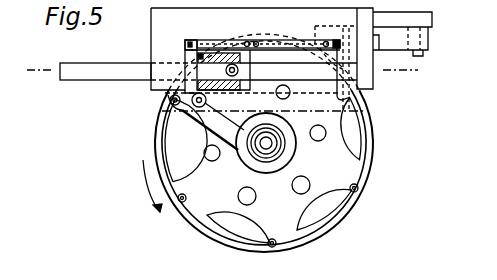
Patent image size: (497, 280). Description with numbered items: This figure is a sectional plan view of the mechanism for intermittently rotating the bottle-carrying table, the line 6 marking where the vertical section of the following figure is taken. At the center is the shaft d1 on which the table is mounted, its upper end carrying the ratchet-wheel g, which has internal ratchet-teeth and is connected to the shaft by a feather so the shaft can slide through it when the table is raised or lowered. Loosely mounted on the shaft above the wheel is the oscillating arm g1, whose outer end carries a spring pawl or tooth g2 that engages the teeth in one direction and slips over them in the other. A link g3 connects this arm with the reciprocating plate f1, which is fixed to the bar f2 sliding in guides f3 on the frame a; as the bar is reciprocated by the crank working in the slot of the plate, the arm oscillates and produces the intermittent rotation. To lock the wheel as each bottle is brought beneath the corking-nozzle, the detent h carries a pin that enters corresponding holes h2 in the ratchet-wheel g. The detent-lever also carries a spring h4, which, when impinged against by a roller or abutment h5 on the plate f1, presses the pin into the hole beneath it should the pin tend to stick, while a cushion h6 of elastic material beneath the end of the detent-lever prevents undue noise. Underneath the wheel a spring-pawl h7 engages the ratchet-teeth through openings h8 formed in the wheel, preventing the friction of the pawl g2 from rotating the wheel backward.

The frame a is at (157, 45).
The section line 6 6 is at (225, 65).
The plate f1 is at (271, 79).
The bar f2 is at (66, 80).
The guides f3 is at (392, 90).
The detent h is at (290, 42).
The spring h4 is at (262, 46).
The roller or abutment h5 is at (206, 43).
The cushion h6 is at (338, 38).
The spring-pawl h7 is at (304, 62).
The openings h8 is at (362, 134).
The holes h2 is at (383, 200).
The ratchet-wheel g is at (373, 157).
The oscillating arm g1 is at (234, 151).
The spring pawl or tooth g2 is at (169, 100).
The link g3 is at (180, 112).
The shaft d1 is at (285, 150).